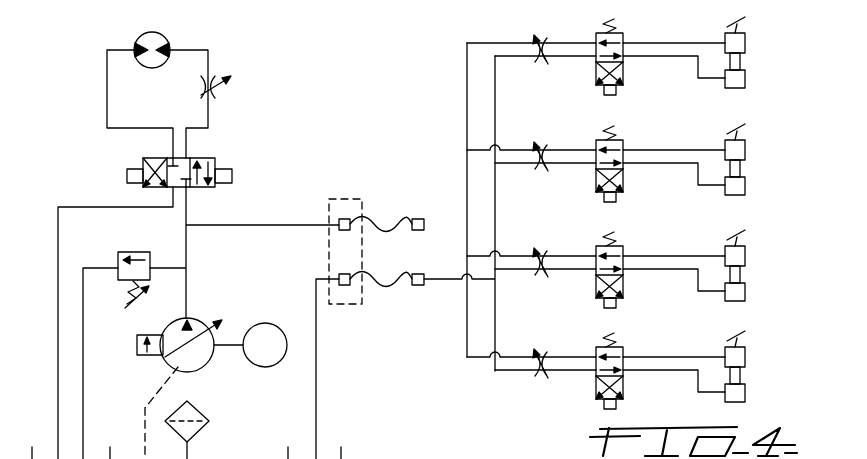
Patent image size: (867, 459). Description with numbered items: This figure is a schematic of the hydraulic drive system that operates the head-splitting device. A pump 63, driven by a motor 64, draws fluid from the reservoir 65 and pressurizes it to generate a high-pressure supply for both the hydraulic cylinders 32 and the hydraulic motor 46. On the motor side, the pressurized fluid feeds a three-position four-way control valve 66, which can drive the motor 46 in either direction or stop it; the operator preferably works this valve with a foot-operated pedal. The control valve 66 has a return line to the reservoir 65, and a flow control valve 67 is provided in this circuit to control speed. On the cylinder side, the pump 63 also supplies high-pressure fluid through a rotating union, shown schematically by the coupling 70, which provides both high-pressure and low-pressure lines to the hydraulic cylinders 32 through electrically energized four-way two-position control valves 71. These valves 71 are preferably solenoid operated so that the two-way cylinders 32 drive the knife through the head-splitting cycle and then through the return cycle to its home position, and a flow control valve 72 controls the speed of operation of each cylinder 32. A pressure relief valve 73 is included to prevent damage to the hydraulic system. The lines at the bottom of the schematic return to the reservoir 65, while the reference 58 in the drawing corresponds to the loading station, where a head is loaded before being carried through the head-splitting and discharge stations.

The hydraulic motor 46 is at (170, 33).
The flow control valve 67 is at (216, 89).
The three-position four-way control valve 66 is at (198, 158).
The quick-disconnect couplings 70 is at (343, 198).
The pressure relief valve 73 is at (130, 252).
The pump 63 is at (194, 320).
The motor 64 is at (277, 323).
The reservoir 65 is at (226, 458).
The loading station 58 is at (421, 458).
The four-way two-position control valves 71 is at (621, 250).
The flow control valve 72 is at (549, 274).
The hydraulic cylinders 32 is at (745, 274).